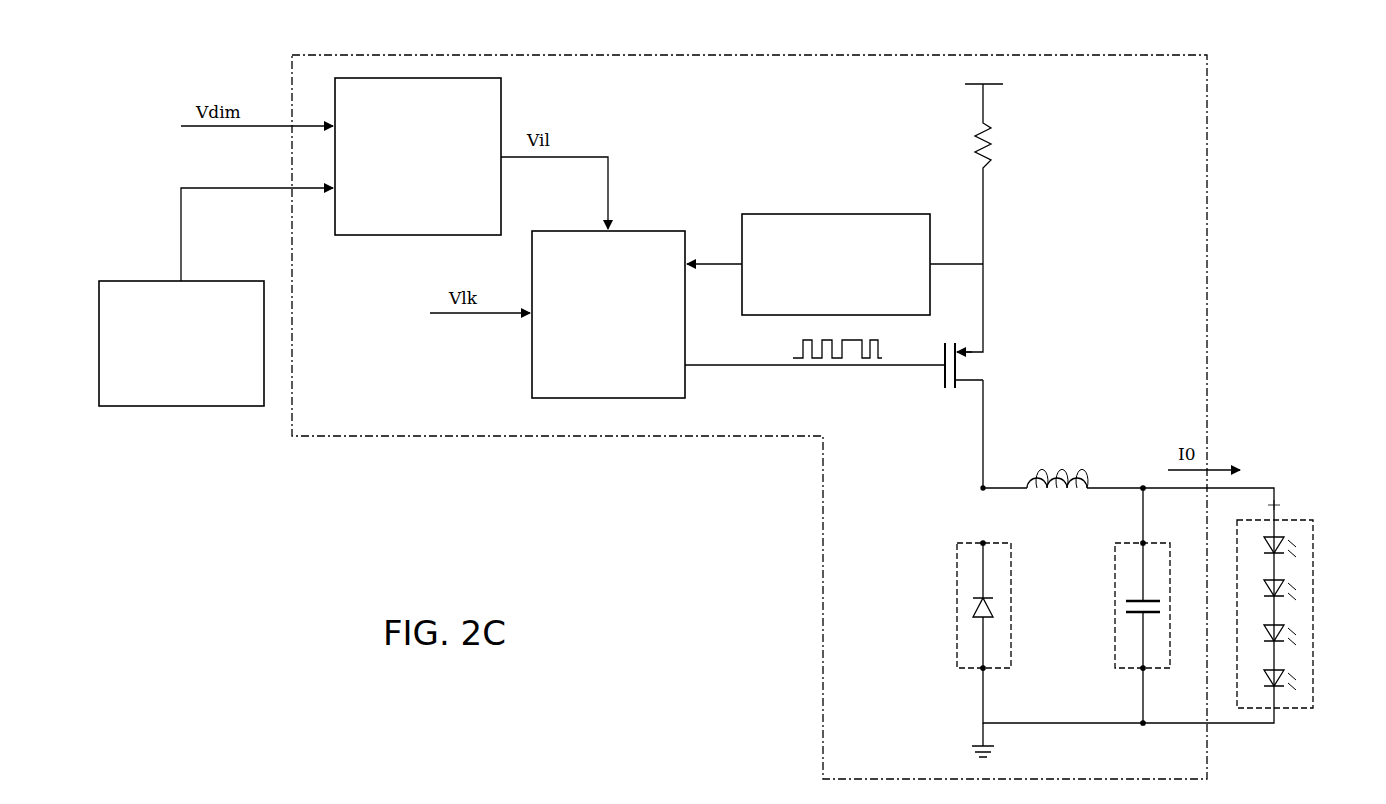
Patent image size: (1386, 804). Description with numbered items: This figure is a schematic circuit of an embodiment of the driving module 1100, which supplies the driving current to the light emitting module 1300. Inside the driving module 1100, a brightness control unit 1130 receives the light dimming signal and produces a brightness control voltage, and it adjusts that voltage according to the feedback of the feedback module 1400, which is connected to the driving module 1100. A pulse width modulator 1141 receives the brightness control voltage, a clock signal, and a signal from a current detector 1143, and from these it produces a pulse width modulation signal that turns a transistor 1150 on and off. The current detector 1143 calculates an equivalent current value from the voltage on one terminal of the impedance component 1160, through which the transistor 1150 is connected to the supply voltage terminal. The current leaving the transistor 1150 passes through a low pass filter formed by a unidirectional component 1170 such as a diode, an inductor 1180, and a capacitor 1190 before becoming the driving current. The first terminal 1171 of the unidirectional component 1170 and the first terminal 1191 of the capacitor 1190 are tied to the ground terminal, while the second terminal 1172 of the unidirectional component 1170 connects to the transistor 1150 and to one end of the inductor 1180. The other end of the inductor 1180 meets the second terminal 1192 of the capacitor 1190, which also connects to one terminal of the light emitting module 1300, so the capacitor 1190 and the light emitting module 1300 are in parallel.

The driving module 1100 is at (1208, 234).
The brightness control unit 1130 is at (418, 156).
The pulse width modulator 1141 is at (608, 314).
The current detector 1143 is at (836, 264).
The feedback module 1400 is at (181, 343).
The impedance component 1160 is at (993, 148).
The transistor 1150 is at (988, 367).
The inductor 1180 is at (1056, 478).
The second terminal of the capacitor 1192 is at (1140, 485).
The second terminal of the unidirectional component 1172 is at (980, 540).
The unidirectional component 1170 is at (955, 600).
The first terminal of the unidirectional component 1171 is at (980, 672).
The capacitor 1190 is at (1113, 600).
The first terminal of the capacitor 1191 is at (1141, 725).
The light emitting module 1300 is at (1318, 593).